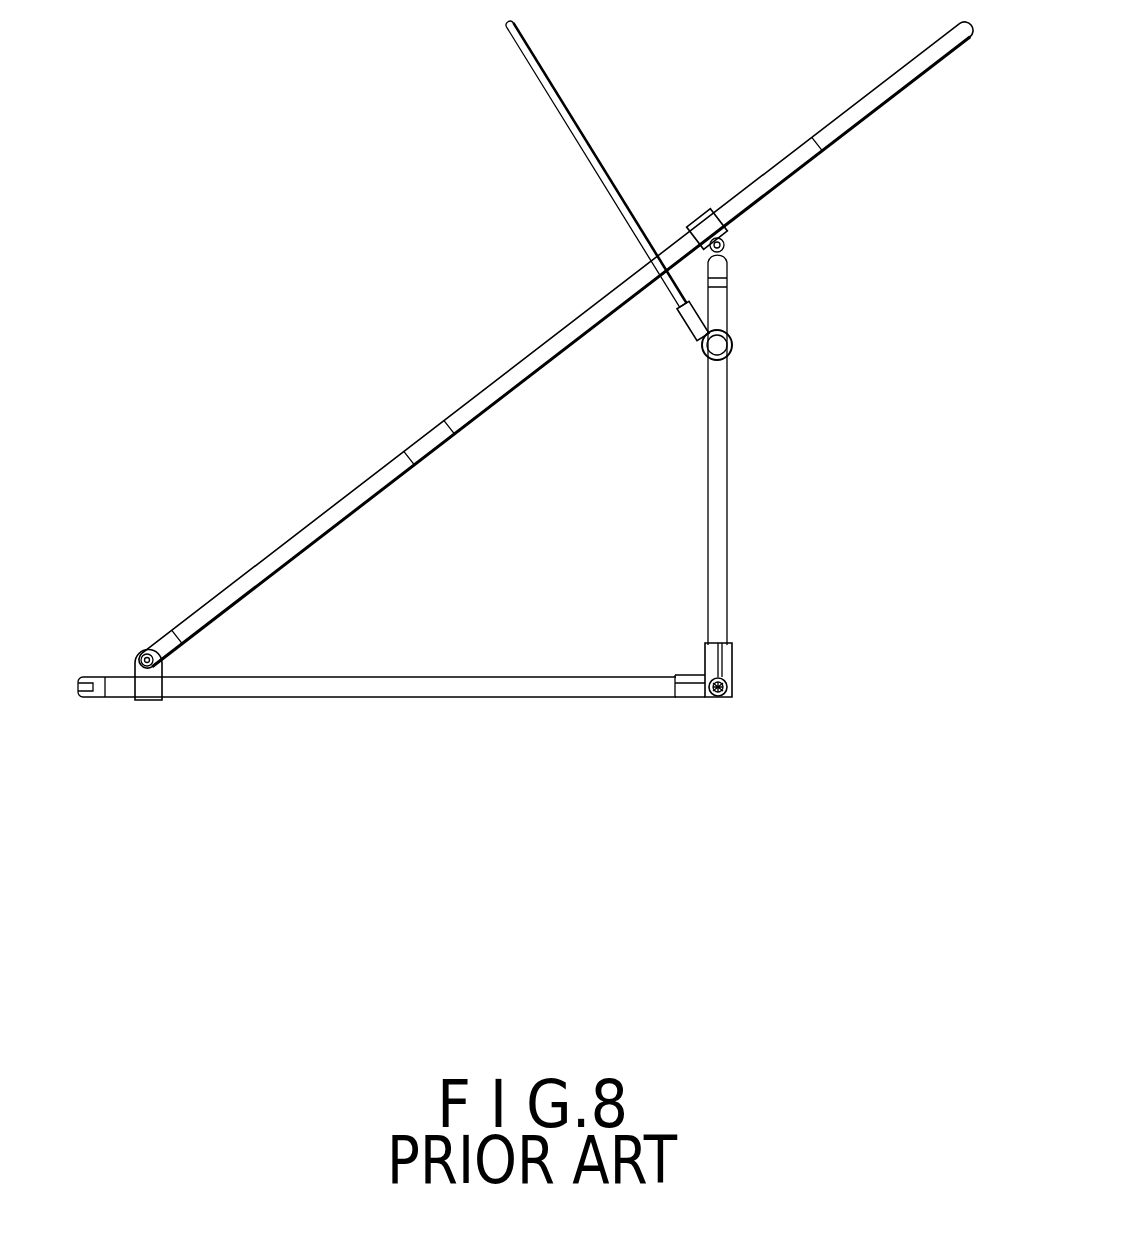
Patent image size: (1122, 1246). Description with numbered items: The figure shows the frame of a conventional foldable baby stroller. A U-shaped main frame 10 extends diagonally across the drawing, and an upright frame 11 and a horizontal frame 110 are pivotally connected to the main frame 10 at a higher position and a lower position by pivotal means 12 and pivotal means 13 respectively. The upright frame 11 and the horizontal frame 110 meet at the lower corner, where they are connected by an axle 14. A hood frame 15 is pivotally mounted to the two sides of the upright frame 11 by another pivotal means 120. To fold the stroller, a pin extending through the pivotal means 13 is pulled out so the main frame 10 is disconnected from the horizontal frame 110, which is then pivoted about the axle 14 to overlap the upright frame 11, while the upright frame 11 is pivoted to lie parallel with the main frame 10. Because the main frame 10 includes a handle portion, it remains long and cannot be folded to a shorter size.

The main frame 10 is at (496, 378).
The upright frame 11 is at (723, 465).
The pivotal means 12 is at (728, 232).
The pivotal means 13 is at (145, 655).
The axle 14 is at (714, 698).
The hood frame 15 is at (548, 80).
The horizontal frame 110 is at (496, 678).
The pivotal means 120 is at (712, 352).